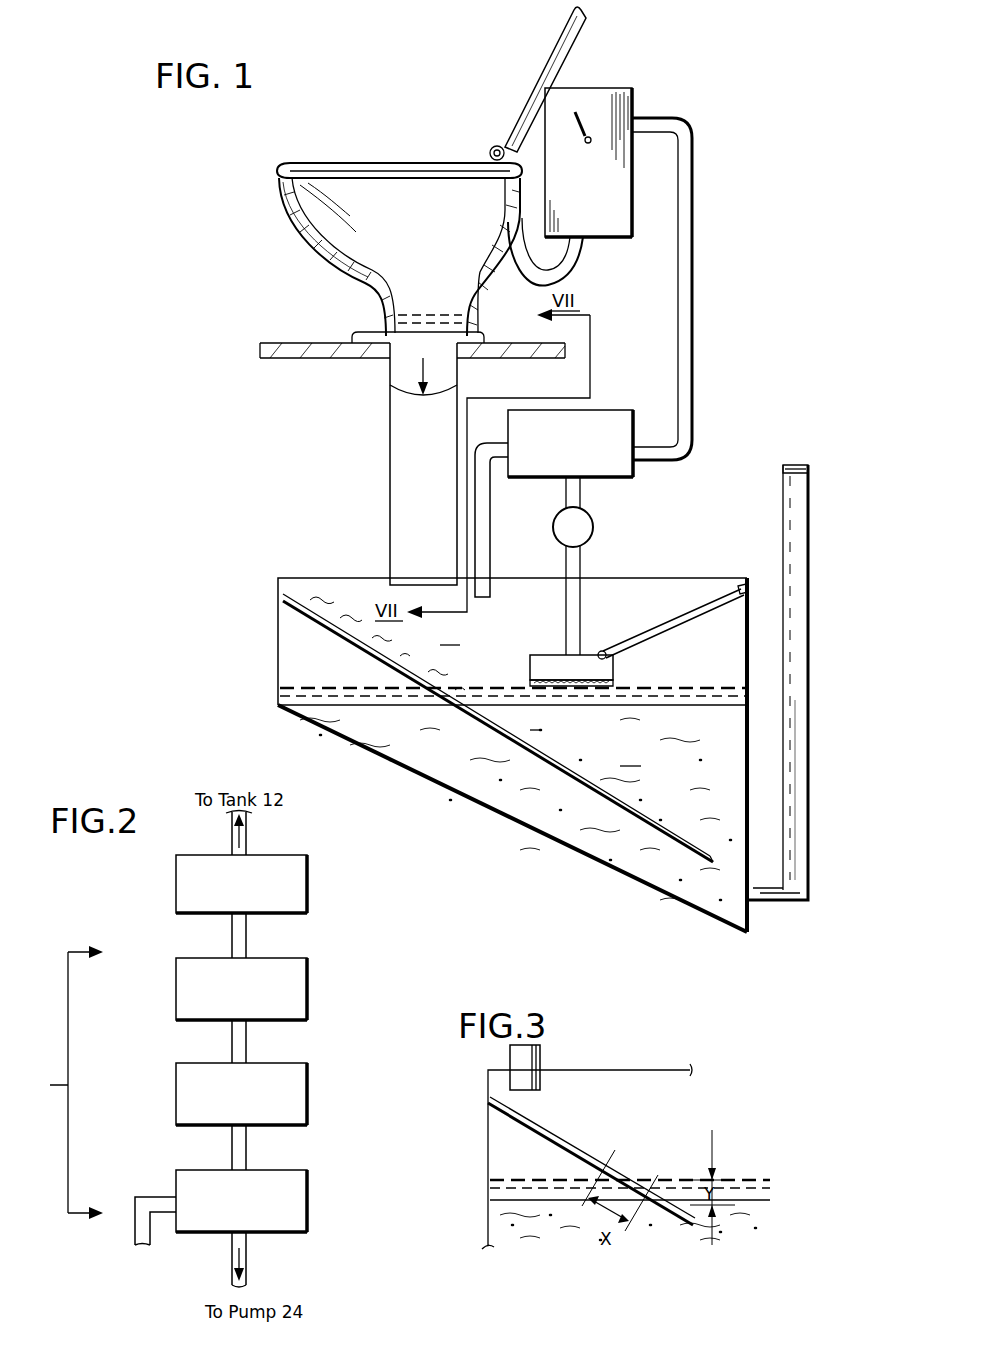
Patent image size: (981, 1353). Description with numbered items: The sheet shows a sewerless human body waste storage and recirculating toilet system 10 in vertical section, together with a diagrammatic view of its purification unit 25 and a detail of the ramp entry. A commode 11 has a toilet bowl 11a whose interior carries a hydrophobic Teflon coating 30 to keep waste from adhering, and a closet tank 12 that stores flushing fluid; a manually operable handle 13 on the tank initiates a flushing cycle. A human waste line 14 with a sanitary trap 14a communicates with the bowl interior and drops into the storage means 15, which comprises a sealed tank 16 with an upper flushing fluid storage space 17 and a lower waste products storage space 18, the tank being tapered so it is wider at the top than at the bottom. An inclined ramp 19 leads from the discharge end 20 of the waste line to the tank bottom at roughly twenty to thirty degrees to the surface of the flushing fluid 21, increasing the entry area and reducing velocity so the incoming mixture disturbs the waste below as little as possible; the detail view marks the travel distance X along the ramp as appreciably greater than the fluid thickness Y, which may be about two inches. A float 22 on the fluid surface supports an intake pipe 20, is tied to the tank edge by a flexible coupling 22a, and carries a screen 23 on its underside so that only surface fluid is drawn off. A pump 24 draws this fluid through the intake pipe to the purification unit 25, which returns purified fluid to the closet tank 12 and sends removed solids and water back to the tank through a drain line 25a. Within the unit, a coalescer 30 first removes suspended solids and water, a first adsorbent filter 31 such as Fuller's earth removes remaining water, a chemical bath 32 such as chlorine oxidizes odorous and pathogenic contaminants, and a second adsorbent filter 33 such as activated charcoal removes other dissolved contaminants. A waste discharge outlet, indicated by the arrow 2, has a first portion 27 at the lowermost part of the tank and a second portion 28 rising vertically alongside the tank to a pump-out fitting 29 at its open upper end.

In FIG. 1, the overflow pipe assembly 2 is at (822, 815).
In FIG. 1, the sewerless human body waste storage and recirculating toilet system 10 is at (665, 94).
In FIG. 1, the commode 11 is at (398, 146).
In FIG. 1, the toilet bowl 11a is at (290, 164).
In FIG. 1, the closet tank 12 is at (625, 88).
In FIG. 1, the manually operable handle 13 is at (588, 118).
In FIG. 1, the human waste line 14 is at (462, 372).
In FIG. 1, the sanitary trap 14a is at (416, 396).
In FIG. 1, the waste storage means 15 is at (268, 684).
In FIG. 1, the sealed tank 16 is at (486, 808).
In FIG. 1, the upper flushing fluid storage space 17 is at (452, 634).
In FIG. 1, the lower waste products storage space 18 is at (515, 809).
In FIG. 1, the inclined ramp 19 is at (312, 624).
In FIG. 3, the inclined ramp 19 is at (522, 1125).
In FIG. 1, the intake pipe 20 is at (422, 583).
In FIG. 3, the intake pipe 20 is at (540, 1066).
In FIG. 1, the flushing fluid 21 is at (715, 673).
In FIG. 3, the flushing fluid 21 is at (668, 1182).
In FIG. 1, the float 22 is at (614, 666).
In FIG. 1, the flexible coupling 22a is at (622, 645).
In FIG. 1, the screen 23 is at (612, 683).
In FIG. 1, the pump 24 is at (592, 534).
In FIG. 1, the purification unit 25 is at (618, 473).
In FIG. 2, the purification unit 25 is at (62, 1082).
In FIG. 1, the drain line 25a is at (478, 496).
In FIG. 2, the drain line 25a is at (136, 1232).
In FIG. 1, the first portion of waste discharge outlet 27 is at (778, 900).
In FIG. 1, the second portion of waste discharge outlet 28 is at (803, 650).
In FIG. 1, the pump-out fitting 29 is at (783, 470).
In FIG. 1, the coalescer 30 is at (357, 277).
In FIG. 2, the coalescer 30 is at (178, 1175).
In FIG. 2, the first adsorbent filter 31 is at (180, 1093).
In FIG. 2, the chemical bath 32 is at (190, 980).
In FIG. 2, the second adsorbent filter 33 is at (176, 882).